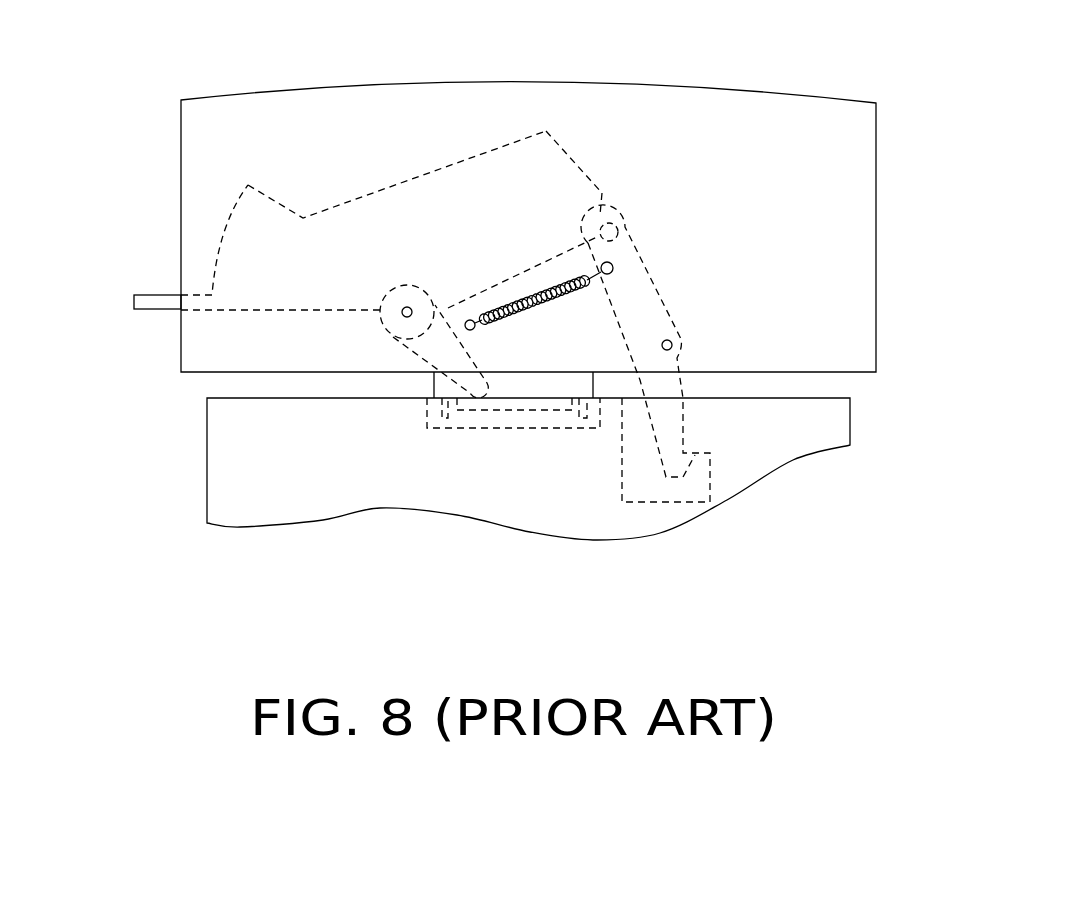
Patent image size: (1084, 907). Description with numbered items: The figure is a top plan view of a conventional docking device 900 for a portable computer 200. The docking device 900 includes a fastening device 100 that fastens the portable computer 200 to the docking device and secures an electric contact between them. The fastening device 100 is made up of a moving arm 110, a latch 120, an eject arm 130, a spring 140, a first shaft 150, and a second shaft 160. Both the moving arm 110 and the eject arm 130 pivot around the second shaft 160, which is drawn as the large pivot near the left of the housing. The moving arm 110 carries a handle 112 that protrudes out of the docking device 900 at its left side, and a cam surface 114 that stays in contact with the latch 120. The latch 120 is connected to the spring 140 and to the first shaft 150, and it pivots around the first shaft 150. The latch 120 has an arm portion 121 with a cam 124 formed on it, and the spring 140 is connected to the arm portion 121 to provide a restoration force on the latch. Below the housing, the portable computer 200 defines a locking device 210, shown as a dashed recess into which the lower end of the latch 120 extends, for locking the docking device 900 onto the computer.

The docking device 900 is at (735, 90).
The fastening device 100 is at (226, 202).
The moving arm 110 is at (427, 173).
The handle 112 is at (152, 298).
The cam surface 114 is at (602, 193).
The latch 120 is at (662, 293).
The arm portion 121 is at (627, 262).
The cam 124 is at (600, 235).
The eject arm 130 is at (473, 393).
The spring 140 is at (543, 295).
The first shaft 150 is at (672, 341).
The second shaft 160 is at (407, 306).
The portable computer 200 is at (850, 412).
The locking device 210 is at (643, 485).